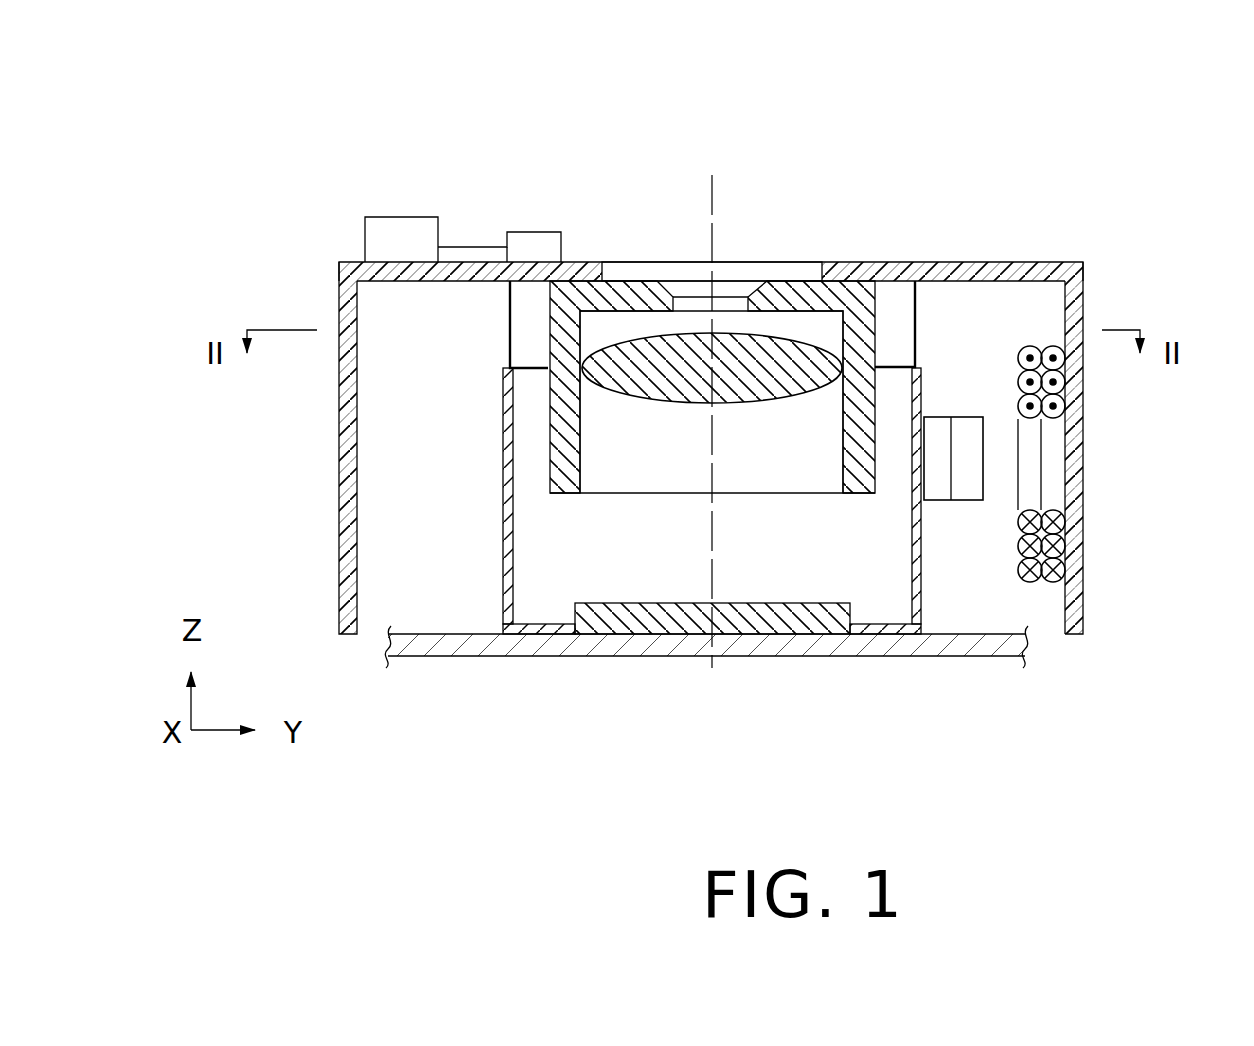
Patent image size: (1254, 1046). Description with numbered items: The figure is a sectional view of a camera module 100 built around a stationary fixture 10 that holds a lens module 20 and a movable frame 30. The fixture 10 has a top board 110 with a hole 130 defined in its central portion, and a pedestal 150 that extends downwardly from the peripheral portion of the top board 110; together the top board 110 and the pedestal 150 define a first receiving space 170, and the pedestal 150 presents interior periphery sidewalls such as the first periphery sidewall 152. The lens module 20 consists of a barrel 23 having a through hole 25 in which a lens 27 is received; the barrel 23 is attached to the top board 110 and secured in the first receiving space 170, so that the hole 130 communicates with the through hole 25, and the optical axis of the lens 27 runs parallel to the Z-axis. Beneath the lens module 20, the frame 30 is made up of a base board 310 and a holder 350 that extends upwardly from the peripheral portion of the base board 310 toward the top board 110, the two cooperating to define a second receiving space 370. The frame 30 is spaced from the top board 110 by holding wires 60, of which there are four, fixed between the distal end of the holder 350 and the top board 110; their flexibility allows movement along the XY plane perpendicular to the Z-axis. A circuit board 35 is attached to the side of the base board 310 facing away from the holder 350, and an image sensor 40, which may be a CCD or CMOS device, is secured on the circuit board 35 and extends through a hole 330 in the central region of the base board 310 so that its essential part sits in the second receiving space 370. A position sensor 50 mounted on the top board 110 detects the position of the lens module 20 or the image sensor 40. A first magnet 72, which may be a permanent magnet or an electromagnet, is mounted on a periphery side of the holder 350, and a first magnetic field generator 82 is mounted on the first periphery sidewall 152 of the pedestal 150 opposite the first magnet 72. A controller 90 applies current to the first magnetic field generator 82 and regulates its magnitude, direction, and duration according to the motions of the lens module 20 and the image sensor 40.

The camera module 100 is at (1058, 128).
The fixture 10 is at (1196, 200).
The top board 110 is at (1037, 266).
The hole 130 is at (803, 275).
The pedestal 150 is at (1073, 298).
The first periphery sidewall 152 is at (1057, 626).
The first receiving space 170 is at (957, 347).
The lens module 20 is at (620, 262).
The barrel 23 is at (785, 292).
The through hole 25 is at (648, 322).
The lens 27 is at (678, 358).
The movable frame 30 is at (216, 388).
The base board 310 is at (547, 624).
The hole 330 is at (830, 628).
The holder 350 is at (502, 445).
The second receiving space 370 is at (882, 587).
The circuit board 35 is at (478, 647).
The image sensor 40 is at (628, 617).
The position sensor 50 is at (388, 232).
The controller 90 is at (515, 231).
The holding wire 60 is at (503, 307).
The first magnet 72 is at (970, 483).
The first magnetic field generator 82 is at (1053, 407).